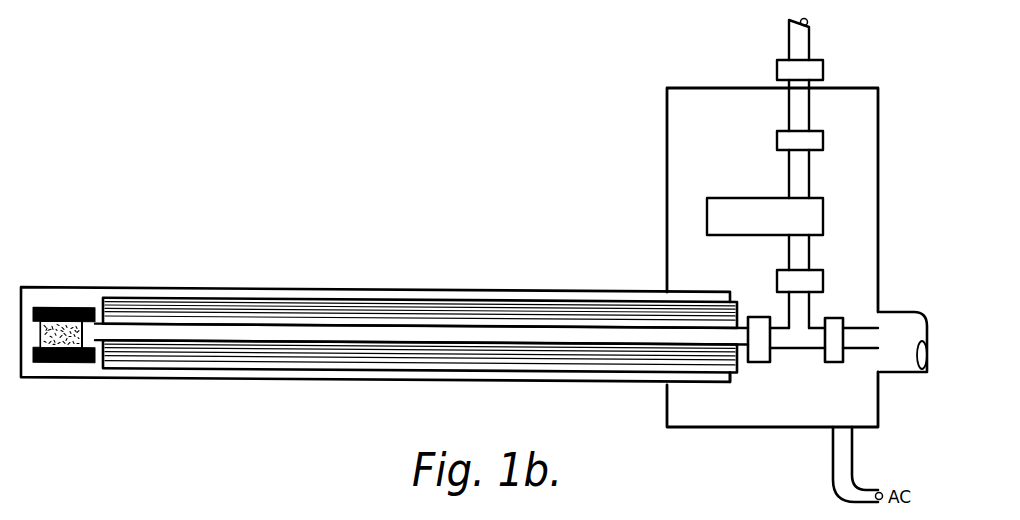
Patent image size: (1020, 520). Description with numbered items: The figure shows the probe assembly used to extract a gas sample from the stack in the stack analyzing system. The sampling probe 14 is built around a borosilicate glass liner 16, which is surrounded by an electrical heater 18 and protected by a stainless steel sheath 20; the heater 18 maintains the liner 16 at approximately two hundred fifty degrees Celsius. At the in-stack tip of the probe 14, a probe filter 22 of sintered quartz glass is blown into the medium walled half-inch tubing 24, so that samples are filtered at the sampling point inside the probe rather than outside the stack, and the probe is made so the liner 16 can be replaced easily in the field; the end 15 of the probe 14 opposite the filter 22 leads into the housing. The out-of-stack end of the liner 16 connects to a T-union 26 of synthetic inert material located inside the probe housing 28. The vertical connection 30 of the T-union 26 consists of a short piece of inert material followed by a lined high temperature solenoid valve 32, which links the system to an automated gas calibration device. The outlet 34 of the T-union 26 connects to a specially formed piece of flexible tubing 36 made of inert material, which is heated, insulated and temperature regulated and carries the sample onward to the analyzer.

The probe 14 is at (500, 292).
The tube end 15 is at (728, 390).
The borosilicate glass liner 16 is at (108, 335).
The electrical heater 18 is at (367, 300).
The stainless steel sheath 20 is at (430, 378).
The probe filter 22 is at (67, 320).
The medium walled tubing 24 is at (50, 377).
The T-union 26 is at (800, 352).
The probe housing 28 is at (667, 172).
The vertical connection 30 is at (787, 300).
The solenoid valve 32 is at (748, 198).
The outlet 34 is at (828, 362).
The flexible tubing 36 is at (907, 310).